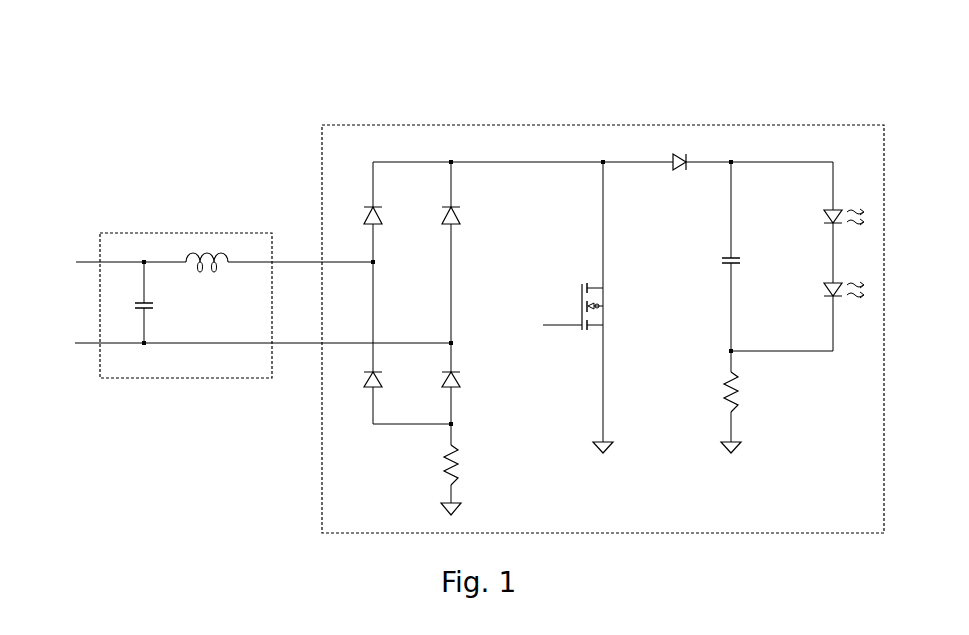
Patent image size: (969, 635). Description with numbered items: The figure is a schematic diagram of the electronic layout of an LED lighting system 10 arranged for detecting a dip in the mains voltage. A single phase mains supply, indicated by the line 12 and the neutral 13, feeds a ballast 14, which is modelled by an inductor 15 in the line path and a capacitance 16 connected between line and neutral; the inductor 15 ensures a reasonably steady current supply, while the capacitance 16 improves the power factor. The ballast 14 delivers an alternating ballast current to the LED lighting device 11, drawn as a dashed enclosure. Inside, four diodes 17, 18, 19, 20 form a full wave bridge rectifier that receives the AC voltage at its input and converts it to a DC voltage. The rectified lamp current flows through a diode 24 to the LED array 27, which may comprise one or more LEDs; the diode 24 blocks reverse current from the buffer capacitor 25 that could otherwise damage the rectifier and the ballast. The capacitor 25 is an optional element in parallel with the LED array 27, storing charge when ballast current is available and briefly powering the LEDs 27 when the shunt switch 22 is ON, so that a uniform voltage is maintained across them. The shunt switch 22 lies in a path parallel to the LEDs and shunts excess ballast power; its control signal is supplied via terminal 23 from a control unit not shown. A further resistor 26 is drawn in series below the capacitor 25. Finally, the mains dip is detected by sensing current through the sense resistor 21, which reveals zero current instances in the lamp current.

The electronic schematic layout of the LED lighting system 10 is at (765, 60).
The LED lighting device 11 is at (817, 123).
The line 12 is at (64, 250).
The neutral 13 is at (60, 355).
The ballast 14 is at (152, 226).
The inductor 15 is at (227, 245).
The capacitance 16 is at (157, 315).
The diode 17 is at (351, 218).
The diode 18 is at (363, 394).
The diode 19 is at (464, 205).
The diode 20 is at (464, 394).
The sense resistor 21 is at (465, 486).
The shunt switch 22 is at (620, 315).
The terminal 23 is at (540, 318).
The diode 24 is at (677, 182).
The buffer capacitor 25 is at (719, 275).
The resistor 26 is at (749, 398).
The LED array 27 is at (874, 229).